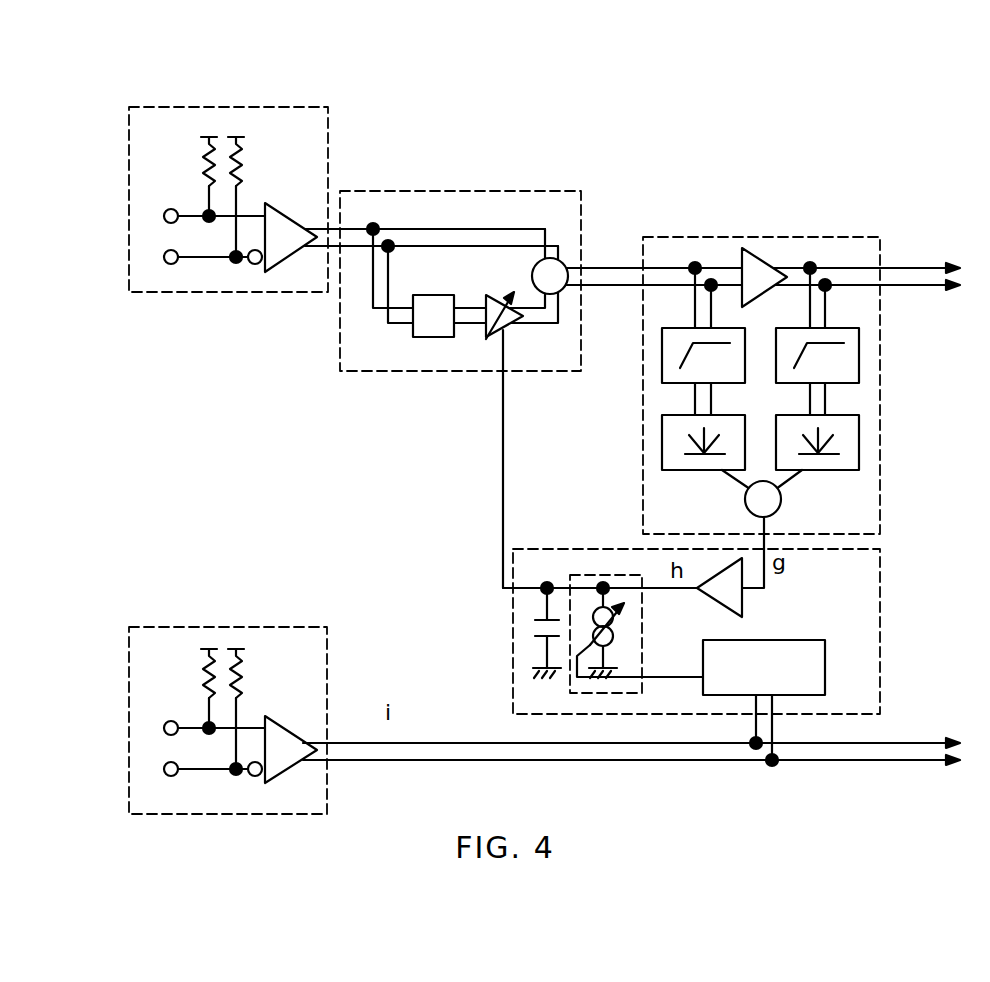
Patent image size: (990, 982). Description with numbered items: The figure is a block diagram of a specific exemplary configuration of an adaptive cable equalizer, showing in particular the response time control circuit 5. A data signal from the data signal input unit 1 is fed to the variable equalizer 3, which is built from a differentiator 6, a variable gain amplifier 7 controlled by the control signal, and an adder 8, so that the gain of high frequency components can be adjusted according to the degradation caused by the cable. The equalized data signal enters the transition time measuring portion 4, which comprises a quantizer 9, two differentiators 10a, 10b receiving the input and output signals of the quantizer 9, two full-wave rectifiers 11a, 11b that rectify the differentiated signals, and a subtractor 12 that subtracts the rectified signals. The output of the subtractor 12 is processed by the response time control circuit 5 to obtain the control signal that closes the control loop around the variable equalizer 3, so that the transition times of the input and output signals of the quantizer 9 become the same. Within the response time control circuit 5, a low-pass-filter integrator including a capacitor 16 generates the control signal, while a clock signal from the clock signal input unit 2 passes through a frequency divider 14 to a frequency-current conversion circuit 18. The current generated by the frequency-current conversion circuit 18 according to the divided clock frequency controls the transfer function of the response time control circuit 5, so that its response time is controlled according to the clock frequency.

The data signal input unit 1 is at (230, 105).
The clock signal input unit 2 is at (228, 625).
The variable equalizer 3 is at (477, 190).
The transition time measuring portion 4 is at (880, 248).
The response time control circuit 5 is at (880, 697).
The differentiator 6 is at (427, 337).
The variable gain amplifier 7 is at (507, 325).
The adder 8 is at (566, 260).
The quantizer 9 is at (760, 255).
The differentiator 10a is at (662, 368).
The differentiator 10b is at (859, 355).
The full-wave rectifier 11a is at (662, 443).
The full-wave rectifier 11b is at (859, 440).
The subtractor 12 is at (781, 499).
The frequency divider 14 is at (825, 668).
The capacitor 16 is at (533, 628).
The frequency-current conversion circuit 18 is at (562, 683).